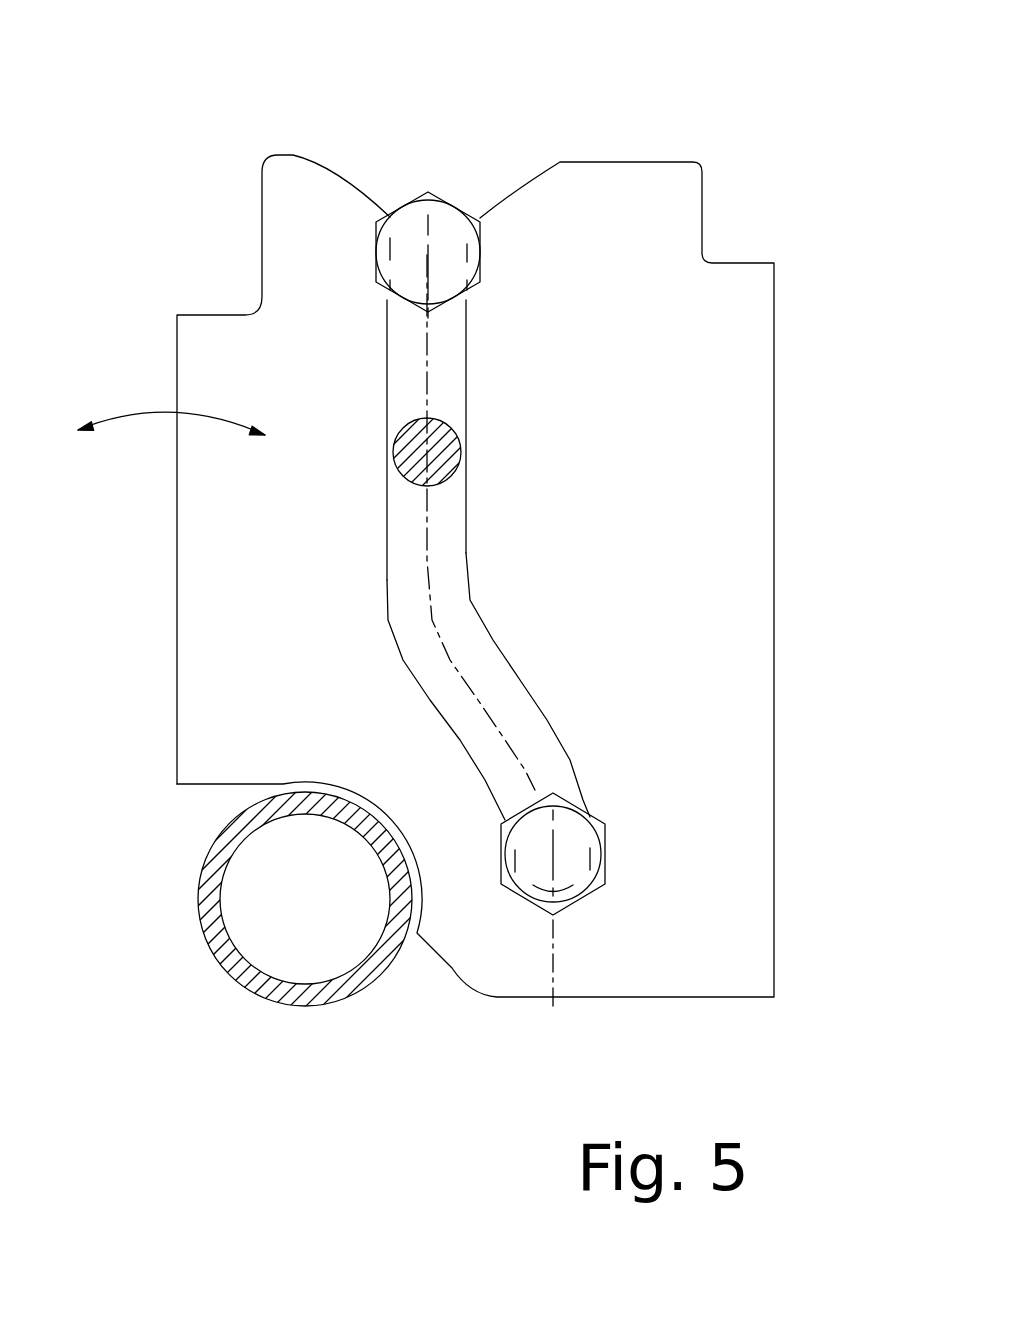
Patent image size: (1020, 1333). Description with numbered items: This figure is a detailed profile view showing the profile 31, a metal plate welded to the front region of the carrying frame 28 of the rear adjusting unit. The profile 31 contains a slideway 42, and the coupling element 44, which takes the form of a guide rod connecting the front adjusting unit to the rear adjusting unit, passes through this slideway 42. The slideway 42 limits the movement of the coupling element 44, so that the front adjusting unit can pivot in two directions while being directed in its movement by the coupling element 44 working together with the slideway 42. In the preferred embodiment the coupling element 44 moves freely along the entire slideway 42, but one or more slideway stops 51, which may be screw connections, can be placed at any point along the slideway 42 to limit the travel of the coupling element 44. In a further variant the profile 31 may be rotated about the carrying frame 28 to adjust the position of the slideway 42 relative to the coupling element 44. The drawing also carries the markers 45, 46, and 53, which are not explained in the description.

The carrying frame 28 is at (260, 983).
The profile 31 is at (662, 467).
The slideway 42 is at (468, 410).
The coupling element 44 is at (448, 450).
The straight section of lever arm 45 is at (443, 377).
The curved section of lever arm 46 is at (510, 718).
The slideway stop 51 is at (398, 218).
The pivoting movement 53 is at (171, 386).